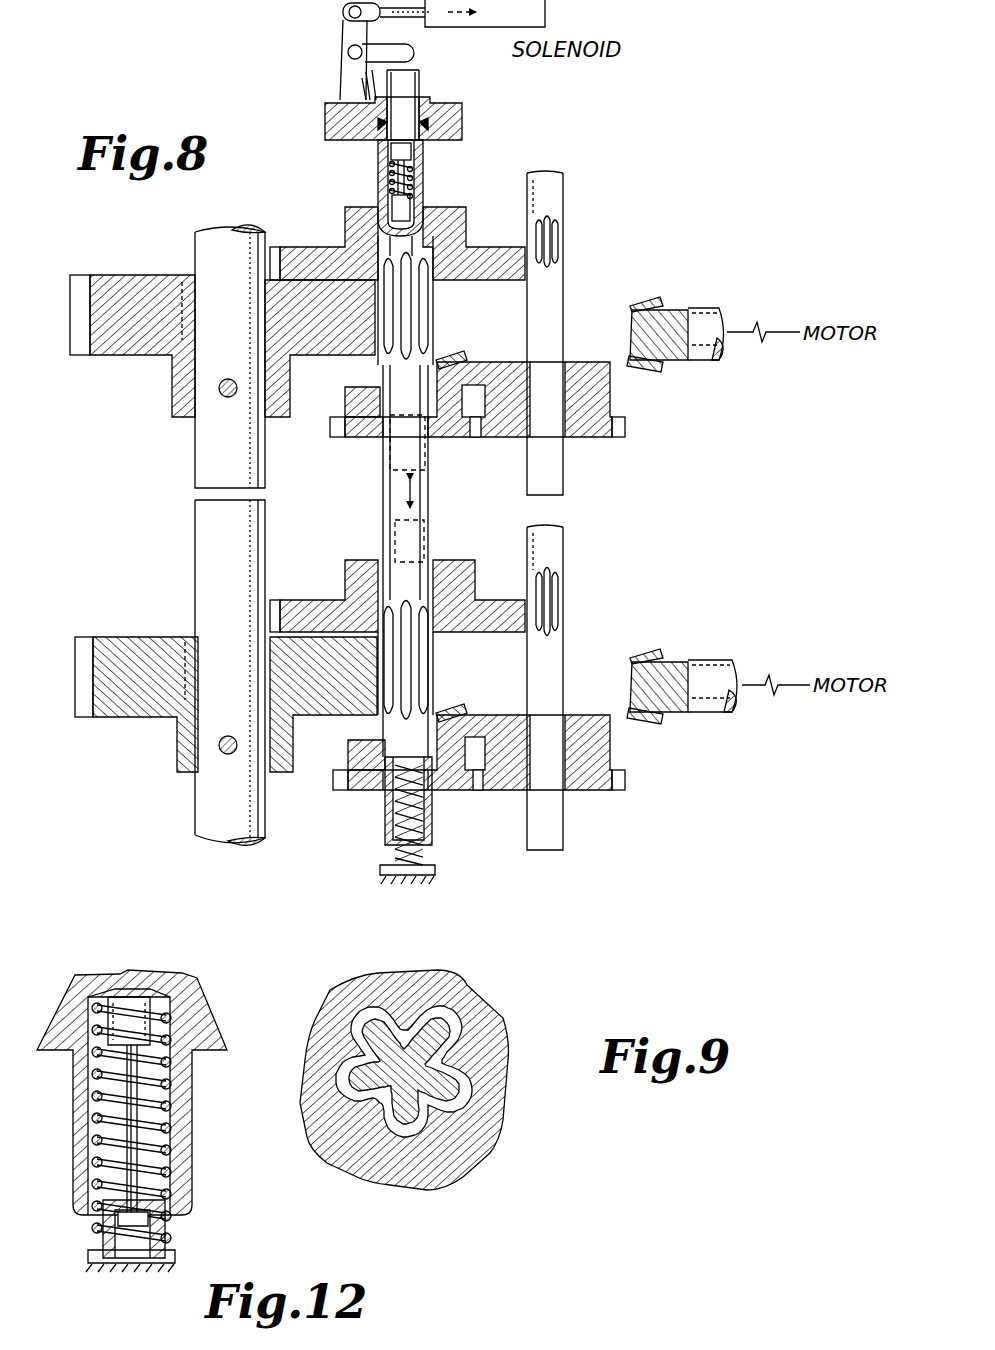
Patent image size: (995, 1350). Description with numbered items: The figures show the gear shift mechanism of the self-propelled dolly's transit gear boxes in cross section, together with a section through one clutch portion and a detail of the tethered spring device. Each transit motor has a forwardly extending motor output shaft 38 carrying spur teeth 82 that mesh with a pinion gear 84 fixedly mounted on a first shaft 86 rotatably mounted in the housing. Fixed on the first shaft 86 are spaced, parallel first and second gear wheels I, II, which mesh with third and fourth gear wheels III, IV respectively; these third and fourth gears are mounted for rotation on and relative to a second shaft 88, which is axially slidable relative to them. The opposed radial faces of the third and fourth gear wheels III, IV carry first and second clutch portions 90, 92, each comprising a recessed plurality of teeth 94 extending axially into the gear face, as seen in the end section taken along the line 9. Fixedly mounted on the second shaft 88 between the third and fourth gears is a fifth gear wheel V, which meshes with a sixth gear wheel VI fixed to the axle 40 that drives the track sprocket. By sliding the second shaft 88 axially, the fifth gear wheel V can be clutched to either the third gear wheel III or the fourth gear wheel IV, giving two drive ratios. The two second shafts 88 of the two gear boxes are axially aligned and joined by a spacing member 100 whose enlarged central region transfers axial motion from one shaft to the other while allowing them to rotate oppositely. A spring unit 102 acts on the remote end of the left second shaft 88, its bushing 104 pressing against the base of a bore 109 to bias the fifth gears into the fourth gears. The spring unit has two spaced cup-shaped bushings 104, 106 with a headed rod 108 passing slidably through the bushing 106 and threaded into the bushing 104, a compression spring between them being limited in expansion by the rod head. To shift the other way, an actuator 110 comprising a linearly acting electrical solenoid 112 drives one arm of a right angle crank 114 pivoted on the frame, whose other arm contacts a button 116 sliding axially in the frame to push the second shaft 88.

In FIG. 8, the electrical solenoid 112 is at (546, 26).
In FIG. 8, the actuator 110 is at (492, 55).
In FIG. 8, the right angle crank 114 is at (340, 30).
In FIG. 8, the button 116 is at (422, 85).
In FIG. 8, the second shaft 88 is at (425, 172).
In FIG. 12, the second shaft 88 is at (190, 1087).
In FIG. 8, the fourth gear wheel IV is at (440, 215).
In FIG. 9, the fourth gear wheel IV is at (466, 983).
In FIG. 8, the sixth gear wheel VI is at (140, 278).
In FIG. 8, the axle 40 is at (260, 235).
In FIG. 8, the second clutch portion 92 is at (436, 275).
In FIG. 9, the second clutch portion 92 is at (425, 1015).
In FIG. 8, the teeth 94 is at (383, 500).
In FIG. 8, the spacing member 100 is at (428, 502).
In FIG. 8, the first clutch portion 90 is at (370, 392).
In FIG. 8, the pinion gear 84 is at (612, 395).
In FIG. 8, the third gear wheel III is at (449, 440).
In FIG. 8, the first gear wheel I is at (596, 440).
In FIG. 8, the second gear wheel II is at (558, 252).
In FIG. 8, the first shaft 86 is at (566, 485).
In FIG. 8, the spur teeth 82 is at (660, 300).
In FIG. 8, the motor output shaft 38 is at (697, 366).
In FIG. 8, the spring unit 102 is at (390, 812).
In FIG. 8, the bore 109 is at (430, 840).
In FIG. 12, the bore 109 is at (172, 1127).
In FIG. 8, the section line 9 is at (350, 606).
In FIG. 9, the fifth gear wheel V is at (450, 1030).
In FIG. 12, the cup-shaped bushing 104 is at (160, 1005).
In FIG. 12, the headed rod 108 is at (140, 1178).
In FIG. 12, the cup-shaped bushing 106 is at (162, 1237).